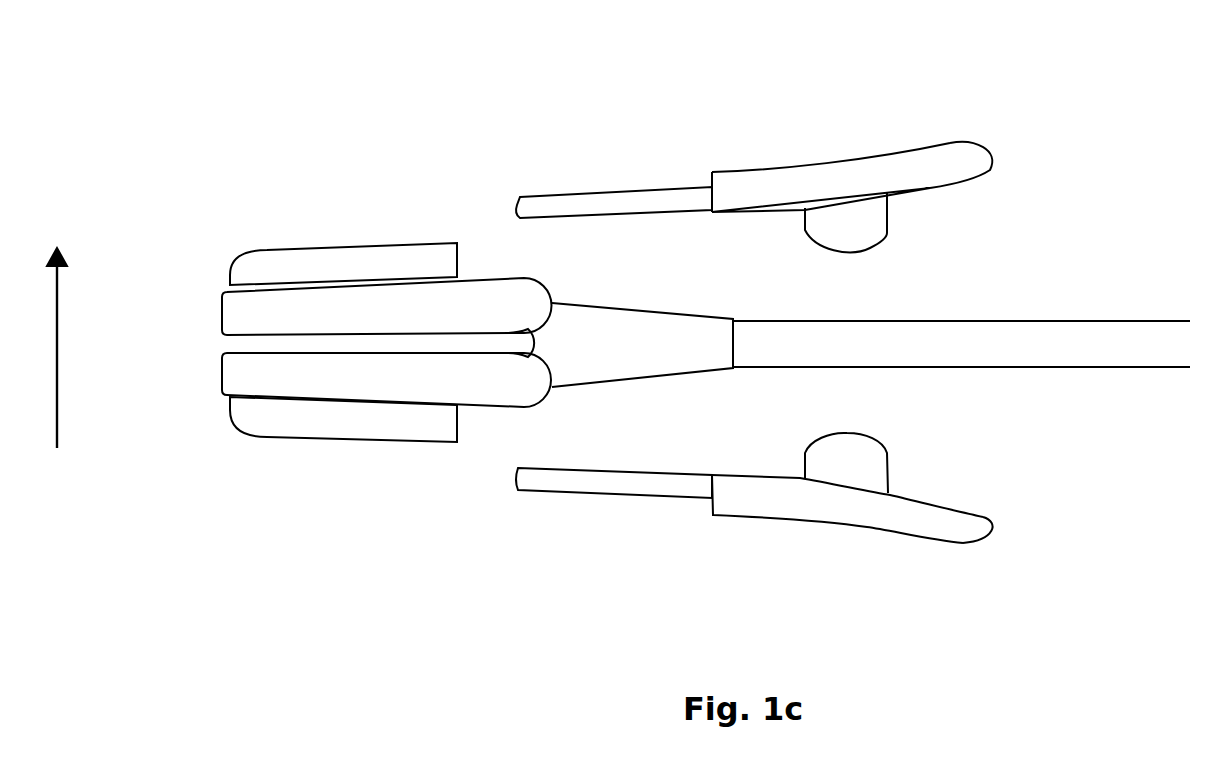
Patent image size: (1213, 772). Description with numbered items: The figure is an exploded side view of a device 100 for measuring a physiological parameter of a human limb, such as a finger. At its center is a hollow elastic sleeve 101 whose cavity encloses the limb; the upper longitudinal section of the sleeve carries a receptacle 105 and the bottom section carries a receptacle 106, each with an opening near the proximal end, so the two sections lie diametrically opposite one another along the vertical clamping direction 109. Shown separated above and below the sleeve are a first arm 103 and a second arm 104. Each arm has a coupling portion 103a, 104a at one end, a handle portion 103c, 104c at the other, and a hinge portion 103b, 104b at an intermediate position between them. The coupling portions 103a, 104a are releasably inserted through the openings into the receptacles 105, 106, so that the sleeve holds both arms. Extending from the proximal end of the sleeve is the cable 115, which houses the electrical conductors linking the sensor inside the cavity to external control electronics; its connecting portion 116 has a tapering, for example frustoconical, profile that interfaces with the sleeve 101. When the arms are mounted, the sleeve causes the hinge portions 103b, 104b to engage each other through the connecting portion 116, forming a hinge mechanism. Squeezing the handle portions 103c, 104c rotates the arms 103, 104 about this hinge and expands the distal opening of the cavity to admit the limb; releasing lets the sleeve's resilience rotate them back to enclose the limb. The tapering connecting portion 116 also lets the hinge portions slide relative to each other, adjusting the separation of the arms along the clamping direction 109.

The device 100 is at (445, 118).
The hollow elastic sleeve 101 is at (217, 325).
The first arm 103 is at (748, 131).
The coupling portion of the first arm 103a is at (600, 192).
The hinge portion of the first arm 103b is at (853, 222).
The handle portion of the first arm 103c is at (950, 145).
The second arm 104 is at (709, 530).
The coupling portion of the second arm 104a is at (600, 492).
The hinge portion of the second arm 104b is at (860, 465).
The handle portion of the second arm 104c is at (960, 542).
The receptacle 105 is at (338, 246).
The receptacle 106 is at (310, 440).
The clamping direction 109 is at (80, 348).
The cable 115 is at (1093, 367).
The connecting portion 116 is at (637, 355).